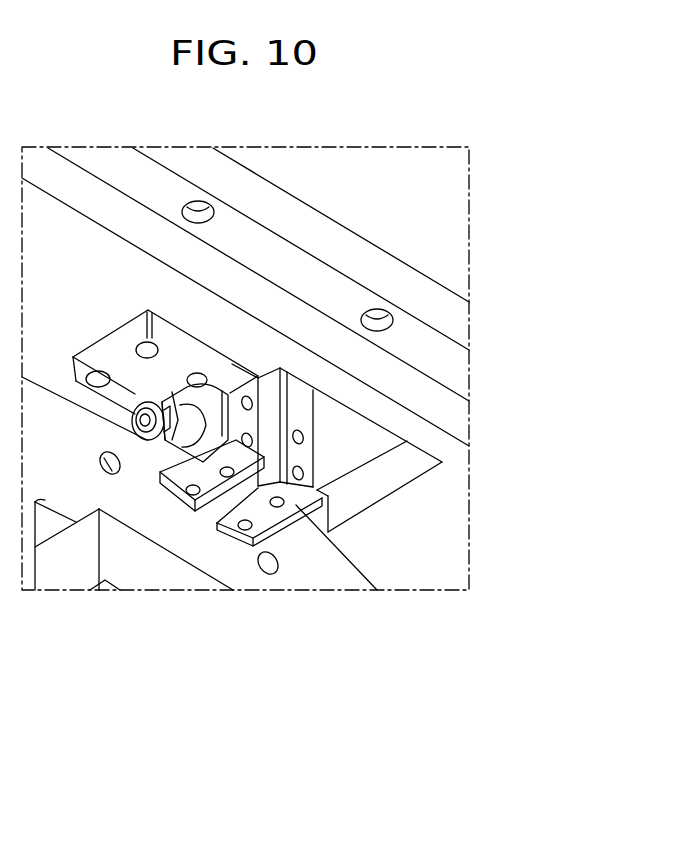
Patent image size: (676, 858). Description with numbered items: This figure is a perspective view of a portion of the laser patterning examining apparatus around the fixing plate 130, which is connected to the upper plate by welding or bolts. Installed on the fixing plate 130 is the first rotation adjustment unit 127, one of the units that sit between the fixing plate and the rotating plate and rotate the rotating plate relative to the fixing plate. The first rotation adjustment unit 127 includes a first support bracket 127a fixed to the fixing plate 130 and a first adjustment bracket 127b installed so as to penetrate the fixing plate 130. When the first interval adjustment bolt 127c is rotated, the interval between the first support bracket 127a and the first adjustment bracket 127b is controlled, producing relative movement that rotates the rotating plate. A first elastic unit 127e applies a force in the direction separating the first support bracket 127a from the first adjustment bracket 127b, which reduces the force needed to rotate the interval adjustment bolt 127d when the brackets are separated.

The fixing plate 130 is at (425, 345).
The first rotation adjustment unit 127 is at (388, 669).
The first support bracket 127a is at (220, 482).
The first adjustment bracket 127b is at (296, 505).
The first interval adjustment bolt 127c is at (145, 423).
The second interval adjustment bolt 127d is at (182, 453).
The first elastic unit 127e is at (243, 492).